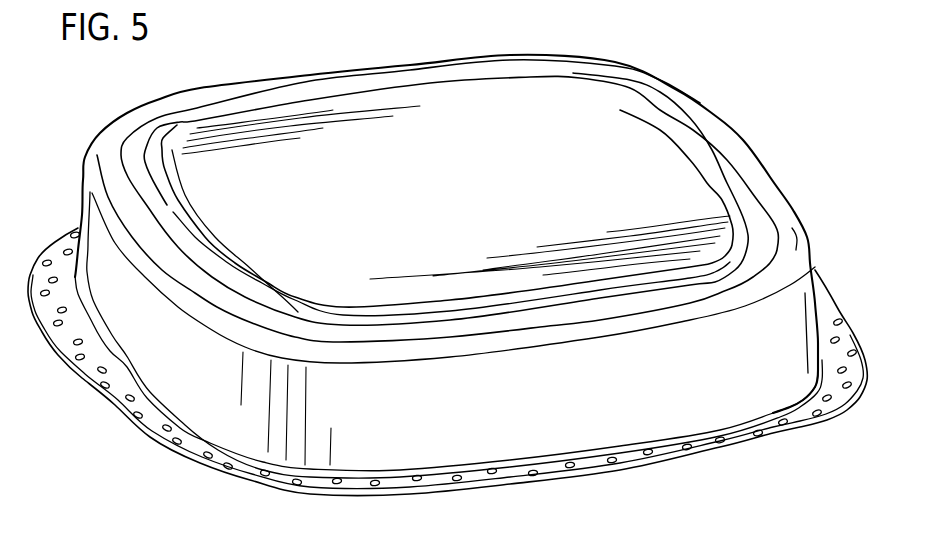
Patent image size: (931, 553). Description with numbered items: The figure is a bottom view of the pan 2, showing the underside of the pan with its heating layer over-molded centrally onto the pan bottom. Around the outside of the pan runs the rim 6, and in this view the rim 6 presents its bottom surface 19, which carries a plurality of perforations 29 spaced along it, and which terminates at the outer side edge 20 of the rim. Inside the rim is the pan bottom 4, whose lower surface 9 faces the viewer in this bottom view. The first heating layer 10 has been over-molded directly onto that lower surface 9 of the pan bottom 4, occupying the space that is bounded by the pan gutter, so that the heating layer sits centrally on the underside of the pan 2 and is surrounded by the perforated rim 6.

The pan 2 is at (789, 63).
The pan bottom 4 is at (640, 90).
The rim 6 is at (833, 312).
The lower surface 9 is at (720, 194).
The first heating layer 10 is at (456, 194).
The bottom surface 19 is at (58, 248).
The outer side edge 20 is at (738, 445).
The perforations 29 is at (490, 471).